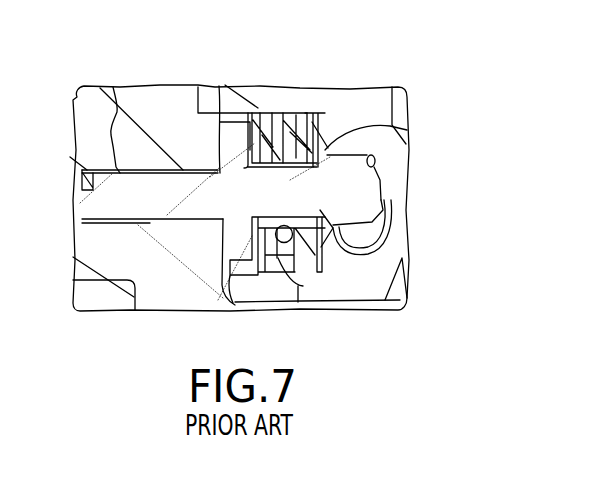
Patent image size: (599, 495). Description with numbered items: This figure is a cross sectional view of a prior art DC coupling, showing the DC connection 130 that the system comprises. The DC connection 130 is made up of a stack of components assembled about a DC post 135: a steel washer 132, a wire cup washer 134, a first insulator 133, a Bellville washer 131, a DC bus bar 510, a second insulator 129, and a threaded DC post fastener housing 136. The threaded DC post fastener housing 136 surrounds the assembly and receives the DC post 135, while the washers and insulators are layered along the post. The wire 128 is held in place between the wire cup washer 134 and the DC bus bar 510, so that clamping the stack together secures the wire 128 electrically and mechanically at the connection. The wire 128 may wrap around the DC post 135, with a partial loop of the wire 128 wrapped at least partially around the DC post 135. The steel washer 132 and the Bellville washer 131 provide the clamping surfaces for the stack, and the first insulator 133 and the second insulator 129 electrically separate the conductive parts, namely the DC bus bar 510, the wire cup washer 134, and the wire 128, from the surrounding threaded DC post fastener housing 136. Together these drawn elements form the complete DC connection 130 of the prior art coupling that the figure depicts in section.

The wire 128 is at (285, 130).
The second insulator 129 is at (236, 298).
The DC connection 130 is at (377, 196).
The Bellville washer 131 is at (395, 127).
The steel washer 132 is at (323, 150).
The first insulator 133 is at (315, 116).
The wire cup washer 134 is at (298, 113).
The DC post 135 is at (235, 138).
The threaded DC post fastener housing 136 is at (110, 92).
The DC bus bar 510 is at (303, 286).